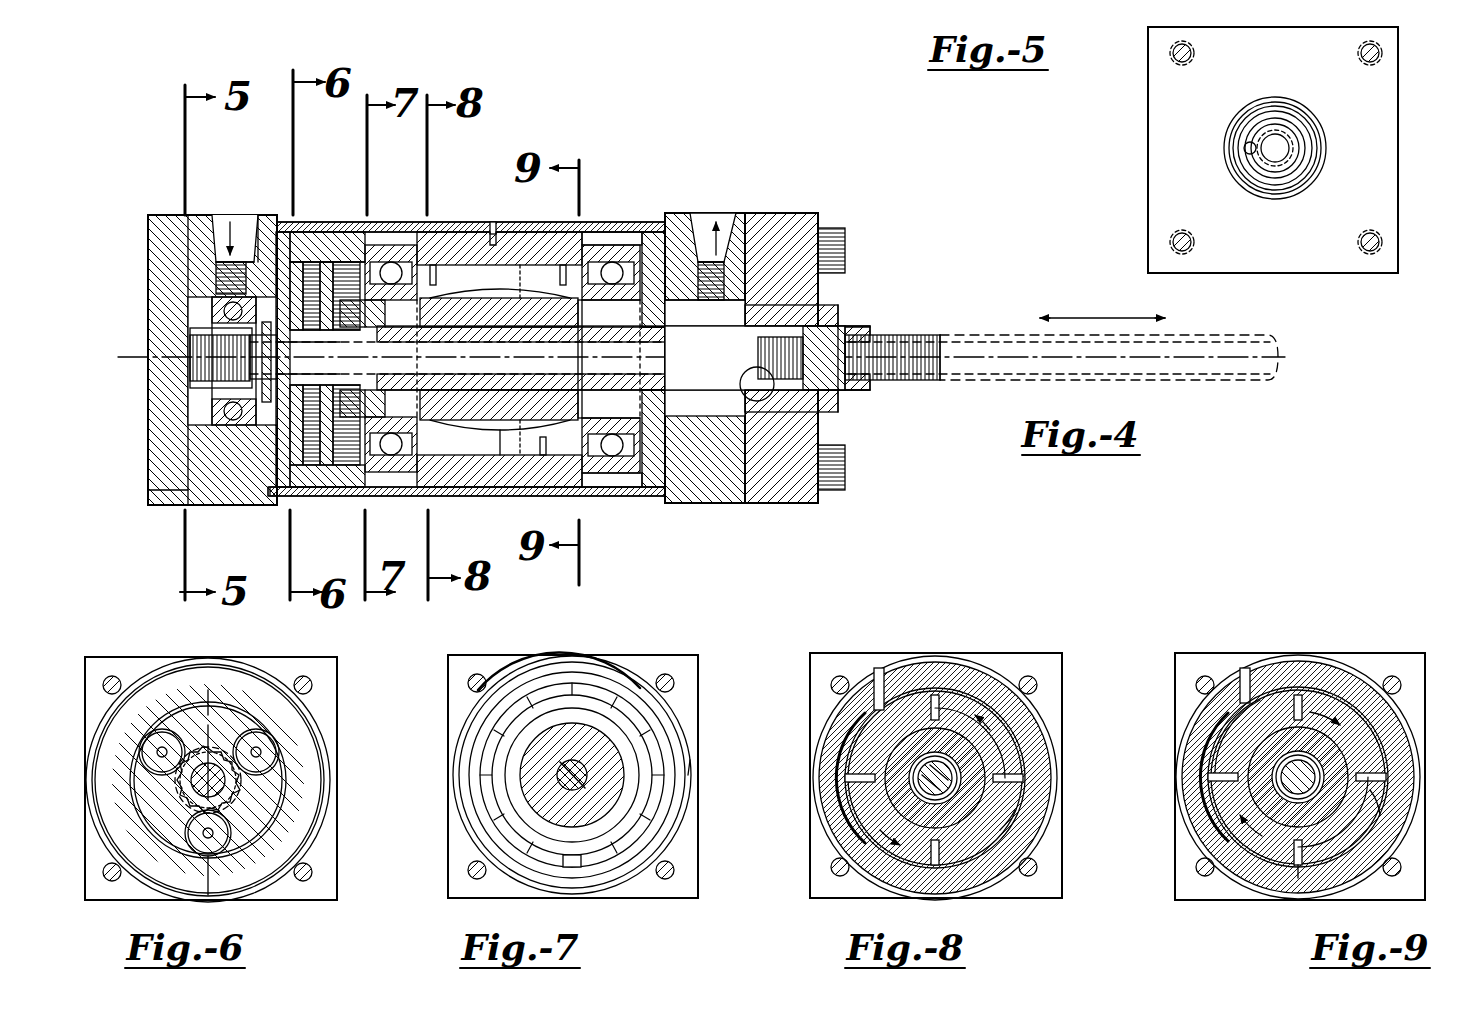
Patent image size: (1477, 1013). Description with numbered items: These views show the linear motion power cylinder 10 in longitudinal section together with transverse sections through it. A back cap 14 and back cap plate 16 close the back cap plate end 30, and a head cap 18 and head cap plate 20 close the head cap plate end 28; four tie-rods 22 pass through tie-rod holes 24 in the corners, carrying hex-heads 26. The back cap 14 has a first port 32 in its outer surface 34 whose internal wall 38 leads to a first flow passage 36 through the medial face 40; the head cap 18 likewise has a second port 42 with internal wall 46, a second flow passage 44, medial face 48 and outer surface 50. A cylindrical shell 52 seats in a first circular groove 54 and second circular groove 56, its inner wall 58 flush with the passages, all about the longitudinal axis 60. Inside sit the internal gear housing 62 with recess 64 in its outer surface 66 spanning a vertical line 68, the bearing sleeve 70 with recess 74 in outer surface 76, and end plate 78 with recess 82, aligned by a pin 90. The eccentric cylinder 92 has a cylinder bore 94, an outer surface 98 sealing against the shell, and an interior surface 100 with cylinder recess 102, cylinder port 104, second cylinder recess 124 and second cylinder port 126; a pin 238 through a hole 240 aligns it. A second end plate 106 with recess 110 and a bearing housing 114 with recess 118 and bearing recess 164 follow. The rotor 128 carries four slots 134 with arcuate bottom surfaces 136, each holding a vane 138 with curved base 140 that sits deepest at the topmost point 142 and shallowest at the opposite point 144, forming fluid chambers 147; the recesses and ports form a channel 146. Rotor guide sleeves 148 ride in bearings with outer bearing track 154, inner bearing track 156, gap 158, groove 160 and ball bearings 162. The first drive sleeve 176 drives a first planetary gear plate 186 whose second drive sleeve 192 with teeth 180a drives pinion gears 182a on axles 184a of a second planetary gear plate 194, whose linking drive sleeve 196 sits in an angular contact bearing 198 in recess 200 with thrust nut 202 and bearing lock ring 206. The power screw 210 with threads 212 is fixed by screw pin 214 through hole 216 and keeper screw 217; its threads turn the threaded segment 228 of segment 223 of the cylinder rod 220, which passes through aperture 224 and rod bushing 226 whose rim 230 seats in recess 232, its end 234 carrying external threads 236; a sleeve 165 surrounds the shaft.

In FIG. 4, the linear motion power cylinder 10 is at (880, 478).
In FIG. 4, the back cap 14 is at (200, 505).
In FIG. 5, the back cap 14 is at (1160, 132).
In FIG. 9, the back cap 14 is at (1375, 660).
In FIG. 4, the back cap plate 16 is at (180, 505).
In FIG. 4, the head cap 18 is at (740, 503).
In FIG. 6, the head cap 18 is at (133, 672).
In FIG. 7, the head cap 18 is at (482, 660).
In FIG. 8, the head cap 18 is at (862, 662).
In FIG. 4, the head cap plate 20 is at (800, 503).
In FIG. 5, the tie-rods 22 is at (1172, 53).
In FIG. 6, the tie-rods 22 is at (108, 676).
In FIG. 7, the tie-rods 22 is at (465, 680).
In FIG. 8, the tie-rods 22 is at (832, 676).
In FIG. 9, the tie-rods 22 is at (1205, 678).
In FIG. 5, the tie-rod holes 24 is at (1180, 65).
In FIG. 4, the hex-heads 26 is at (845, 250).
In FIG. 4, the head cap plate end 28 is at (820, 497).
In FIG. 4, the back cap plate end 30 is at (150, 455).
In FIG. 4, the first port 32 is at (222, 215).
In FIG. 4, the outer surface 34 is at (250, 262).
In FIG. 4, the first flow passage 36 is at (256, 230).
In FIG. 4, the internal wall 38 is at (216, 262).
In FIG. 4, the medial face 40 is at (296, 232).
In FIG. 4, the second port 42 is at (760, 213).
In FIG. 4, the second flow passage 44 is at (702, 215).
In FIG. 4, the internal wall 46 is at (716, 200).
In FIG. 4, the medial face 48 is at (672, 240).
In FIG. 4, the outer surface 50 is at (775, 213).
In FIG. 4, the cylindrical shell 52 is at (452, 196).
In FIG. 6, the cylindrical shell 52 is at (262, 660).
In FIG. 7, the cylindrical shell 52 is at (545, 662).
In FIG. 8, the cylindrical shell 52 is at (960, 665).
In FIG. 9, the cylindrical shell 52 is at (1240, 668).
In FIG. 4, the first circular groove 54 is at (284, 470).
In FIG. 4, the second circular groove 56 is at (665, 475).
In FIG. 4, the inner wall 58 is at (302, 245).
In FIG. 4, the longitudinal axis 60 is at (195, 345).
In FIG. 5, the longitudinal axis 60 is at (1278, 150).
In FIG. 6, the longitudinal axis 60 is at (222, 788).
In FIG. 7, the longitudinal axis 60 is at (600, 760).
In FIG. 8, the longitudinal axis 60 is at (935, 765).
In FIG. 9, the longitudinal axis 60 is at (1300, 770).
In FIG. 4, the internal gear housing 62 is at (318, 255).
In FIG. 6, the internal gear housing 62 is at (190, 877).
In FIG. 4, the recess 64 is at (340, 260).
In FIG. 6, the recess 64 is at (225, 665).
In FIG. 6, the outer surface 66 is at (318, 718).
In FIG. 6, the vertical line 68 is at (222, 870).
In FIG. 4, the bearing sleeve 70 is at (380, 492).
In FIG. 7, the bearing sleeve 70 is at (660, 752).
In FIG. 4, the recess 74 is at (390, 260).
In FIG. 7, the recess 74 is at (515, 680).
In FIG. 7, the outer surface 76 is at (680, 770).
In FIG. 4, the end plate 78 is at (405, 472).
In FIG. 4, the recess 82 is at (400, 262).
In FIG. 4, the pin 90 is at (265, 500).
In FIG. 4, the eccentric cylinder 92 is at (430, 232).
In FIG. 8, the eccentric cylinder 92 is at (910, 680).
In FIG. 4, the cylinder bore 94 is at (520, 265).
In FIG. 8, the cylinder bore 94 is at (1000, 810).
In FIG. 9, the cylinder bore 94 is at (1228, 805).
In FIG. 8, the outer surface 98 is at (1050, 760).
In FIG. 9, the outer surface 98 is at (1385, 805).
In FIG. 4, the interior surface 100 is at (534, 265).
In FIG. 8, the interior surface 100 is at (990, 850).
In FIG. 9, the interior surface 100 is at (1375, 815).
In FIG. 8, the cylinder recess 102 is at (862, 670).
In FIG. 4, the cylinder port 104 is at (440, 240).
In FIG. 8, the cylinder port 104 is at (878, 665).
In FIG. 4, the second end plate 106 is at (590, 475).
In FIG. 4, the recess 110 is at (590, 250).
In FIG. 4, the bearing housing 114 is at (612, 465).
In FIG. 4, the recess 118 is at (605, 232).
In FIG. 9, the second cylinder recess 124 is at (1212, 735).
In FIG. 9, the second cylinder port 126 is at (1245, 660).
In FIG. 4, the rotor 128 is at (560, 196).
In FIG. 8, the rotor 128 is at (1010, 670).
In FIG. 9, the rotor 128 is at (1315, 690).
In FIG. 8, the slots 134 is at (1000, 775).
In FIG. 9, the slots 134 is at (1225, 775).
In FIG. 4, the arcuate bottom surfaces 136 is at (522, 470).
In FIG. 4, the vane 138 is at (470, 266).
In FIG. 8, the vane 138 is at (945, 700).
In FIG. 9, the vane 138 is at (1300, 700).
In FIG. 4, the curved base 140 is at (545, 487).
In FIG. 9, the topmost point 142 is at (1295, 700).
In FIG. 9, the point opposite the topmost point 144 is at (1296, 860).
In FIG. 4, the channel 146 is at (730, 232).
In FIG. 8, the fluid chambers 147 is at (880, 850).
In FIG. 9, the fluid chambers 147 is at (1225, 830).
In FIG. 7, the rotor guide sleeves 148 is at (610, 735).
In FIG. 7, the outer bearing track 154 is at (650, 730).
In FIG. 4, the inner bearing track 156 is at (652, 465).
In FIG. 7, the inner bearing track 156 is at (655, 710).
In FIG. 4, the gap 158 is at (655, 487).
In FIG. 7, the gap 158 is at (520, 840).
In FIG. 4, the groove 160 is at (680, 358).
In FIG. 7, the groove 160 is at (572, 800).
In FIG. 4, the ball bearings 162 is at (378, 250).
In FIG. 7, the ball bearings 162 is at (562, 860).
In FIG. 4, the recess 164 is at (625, 245).
In FIG. 4, the shaft sleeve 165 is at (560, 358).
In FIG. 4, the first drive sleeve 176 is at (336, 465).
In FIG. 6, the ribs or teeth 180a is at (240, 735).
In FIG. 6, the pinion gears 182a is at (260, 775).
In FIG. 6, the axle 184a is at (262, 748).
In FIG. 4, the first planetary gear plate 186 is at (322, 358).
In FIG. 4, the second drive sleeve 192 is at (250, 440).
In FIG. 6, the second drive sleeve 192 is at (236, 792).
In FIG. 4, the second planetary gear plate 194 is at (282, 358).
In FIG. 4, the linking drive sleeve 196 is at (210, 356).
In FIG. 4, the angular contact bearing 198 is at (215, 407).
In FIG. 5, the angular contact bearing 198 is at (1248, 108).
In FIG. 4, the recess 200 is at (175, 492).
In FIG. 4, the thrust nut 202 is at (225, 395).
In FIG. 5, the thrust nut 202 is at (1260, 118).
In FIG. 5, the bearing lock ring 206 is at (1235, 118).
In FIG. 4, the power screw 210 is at (210, 340).
In FIG. 5, the power screw 210 is at (1252, 168).
In FIG. 6, the power screw 210 is at (185, 788).
In FIG. 7, the power screw 210 is at (585, 790).
In FIG. 8, the power screw 210 is at (920, 762).
In FIG. 4, the threads 212 is at (768, 402).
In FIG. 5, the threads 212 is at (1272, 165).
In FIG. 4, the screw pin 214 is at (215, 310).
In FIG. 5, the screw pin 214 is at (1245, 135).
In FIG. 4, the hole 216 is at (200, 366).
In FIG. 4, the keeper screw 217 is at (220, 322).
In FIG. 5, the keeper screw 217 is at (1252, 150).
In FIG. 8, the cylinder rod 220 is at (1010, 740).
In FIG. 4, the segment 223 is at (500, 358).
In FIG. 4, the aperture 224 is at (705, 318).
In FIG. 4, the rod bushing 226 is at (835, 322).
In FIG. 4, the threaded segment 228 is at (845, 345).
In FIG. 4, the rim 230 is at (800, 312).
In FIG. 4, the recess 232 is at (775, 395).
In FIG. 4, the end 234 is at (950, 360).
In FIG. 4, the external threads 236 is at (912, 336).
In FIG. 4, the pin 238 is at (500, 226).
In FIG. 4, the hole 240 is at (493, 228).